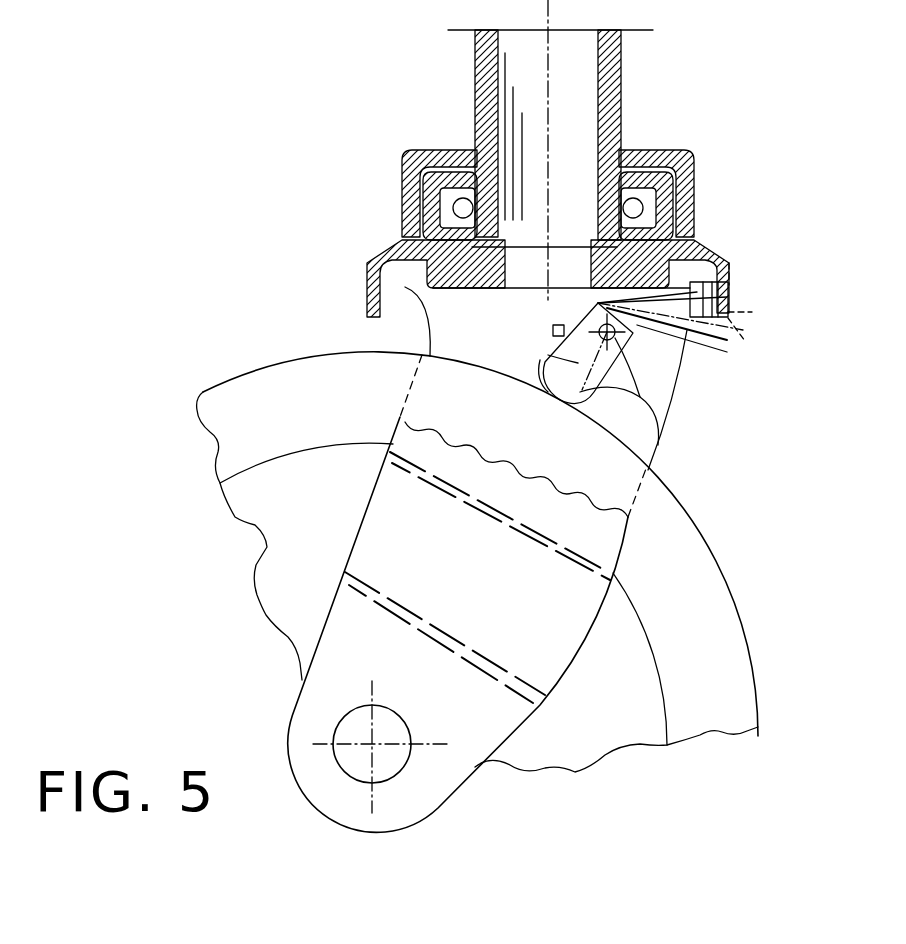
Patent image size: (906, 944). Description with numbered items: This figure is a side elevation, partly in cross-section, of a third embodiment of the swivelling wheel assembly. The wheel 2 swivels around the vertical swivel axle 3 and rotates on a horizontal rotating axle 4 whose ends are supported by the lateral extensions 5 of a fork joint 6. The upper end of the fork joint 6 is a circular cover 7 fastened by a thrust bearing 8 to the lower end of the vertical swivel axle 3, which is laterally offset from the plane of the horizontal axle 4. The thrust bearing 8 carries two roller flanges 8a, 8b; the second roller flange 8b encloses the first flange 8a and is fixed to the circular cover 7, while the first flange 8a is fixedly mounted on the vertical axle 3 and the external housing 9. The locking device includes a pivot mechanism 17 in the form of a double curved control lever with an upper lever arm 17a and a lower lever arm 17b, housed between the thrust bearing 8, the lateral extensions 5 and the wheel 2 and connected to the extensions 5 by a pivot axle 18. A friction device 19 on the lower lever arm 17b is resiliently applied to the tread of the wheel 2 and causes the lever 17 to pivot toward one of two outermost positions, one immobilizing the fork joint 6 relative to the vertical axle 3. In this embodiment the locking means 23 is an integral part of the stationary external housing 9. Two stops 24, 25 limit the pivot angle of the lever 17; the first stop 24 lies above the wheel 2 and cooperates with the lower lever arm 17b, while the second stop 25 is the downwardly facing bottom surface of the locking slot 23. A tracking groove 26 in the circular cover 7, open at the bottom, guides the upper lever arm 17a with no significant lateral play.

The wheel 2 is at (717, 637).
The vertical swivel axle 3 is at (613, 78).
The horizontal rotating axle 4 is at (350, 742).
The lateral extensions 5 is at (636, 445).
The fork joint 6 is at (538, 708).
The circular cover 7 is at (410, 305).
The thrust bearing 8 is at (668, 153).
The first roller flange 8a is at (462, 153).
The second roller flange 8b is at (437, 198).
The external housing 9 is at (690, 200).
The pivot mechanism 17 is at (542, 393).
The upper lever arm 17a is at (720, 350).
The lower lever arm 17b is at (662, 417).
The pivot axle 18 is at (630, 335).
The friction device 19 is at (600, 395).
The locking means 23 is at (737, 341).
The first stop 24 is at (553, 331).
The second stop 25 is at (730, 302).
The tracking groove 26 is at (733, 272).